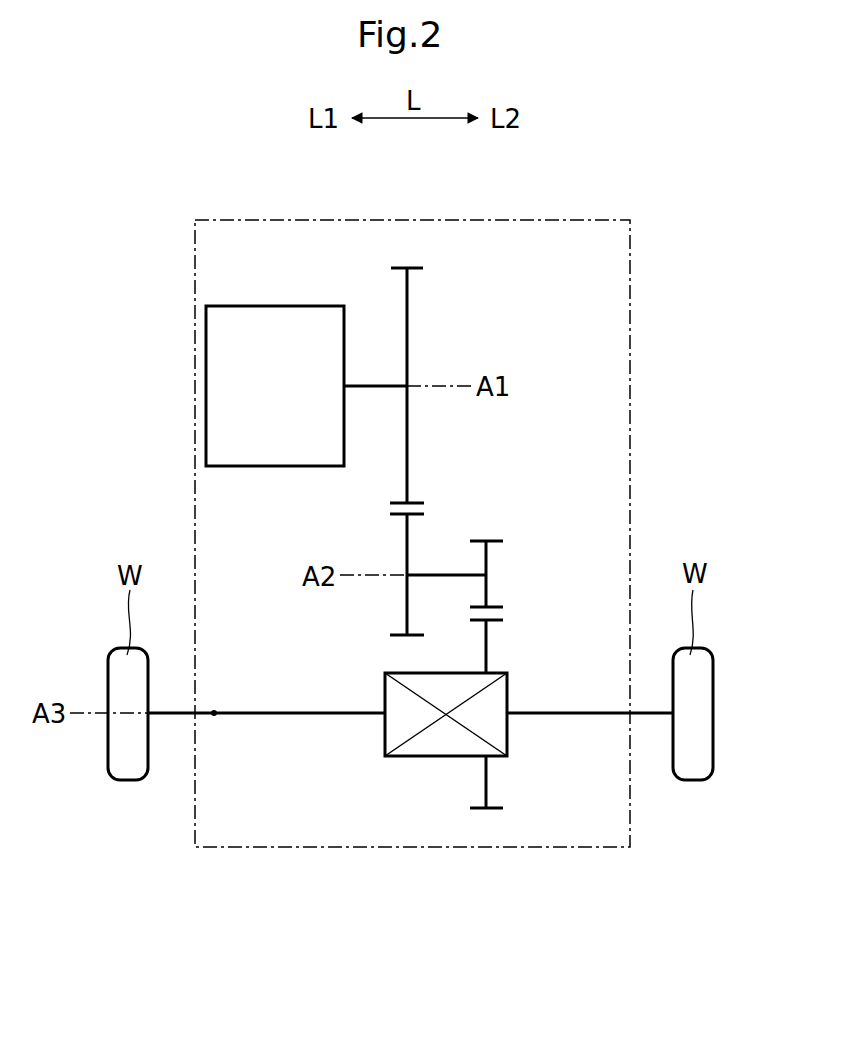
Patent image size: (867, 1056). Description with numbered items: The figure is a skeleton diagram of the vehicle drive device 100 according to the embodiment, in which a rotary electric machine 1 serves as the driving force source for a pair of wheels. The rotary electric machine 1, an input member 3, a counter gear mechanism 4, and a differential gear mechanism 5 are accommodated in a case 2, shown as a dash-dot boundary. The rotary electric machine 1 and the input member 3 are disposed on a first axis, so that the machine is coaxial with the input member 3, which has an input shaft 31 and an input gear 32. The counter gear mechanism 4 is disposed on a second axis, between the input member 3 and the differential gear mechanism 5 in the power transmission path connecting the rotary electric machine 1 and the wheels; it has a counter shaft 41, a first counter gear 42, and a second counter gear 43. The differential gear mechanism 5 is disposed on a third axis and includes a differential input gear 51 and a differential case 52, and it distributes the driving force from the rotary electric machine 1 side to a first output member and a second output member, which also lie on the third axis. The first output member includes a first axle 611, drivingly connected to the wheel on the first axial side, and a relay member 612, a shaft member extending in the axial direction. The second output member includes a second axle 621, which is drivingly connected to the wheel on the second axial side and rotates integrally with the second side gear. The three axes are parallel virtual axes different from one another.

The vehicle drive device 100 is at (170, 181).
The case 2 is at (194, 270).
The rotary electric machine 1 is at (282, 305).
The input member 3 is at (345, 288).
The input shaft 31 is at (368, 385).
The input gear 32 is at (408, 267).
The counter gear mechanism 4 is at (514, 559).
The counter shaft 41 is at (455, 573).
The first counter gear 42 is at (395, 638).
The second counter gear 43 is at (494, 540).
The differential gear mechanism 5 is at (514, 660).
The differential input gear 51 is at (478, 810).
The differential case 52 is at (412, 758).
The first axle 611 is at (170, 716).
The relay member 612 is at (273, 716).
The second axle 621 is at (580, 716).